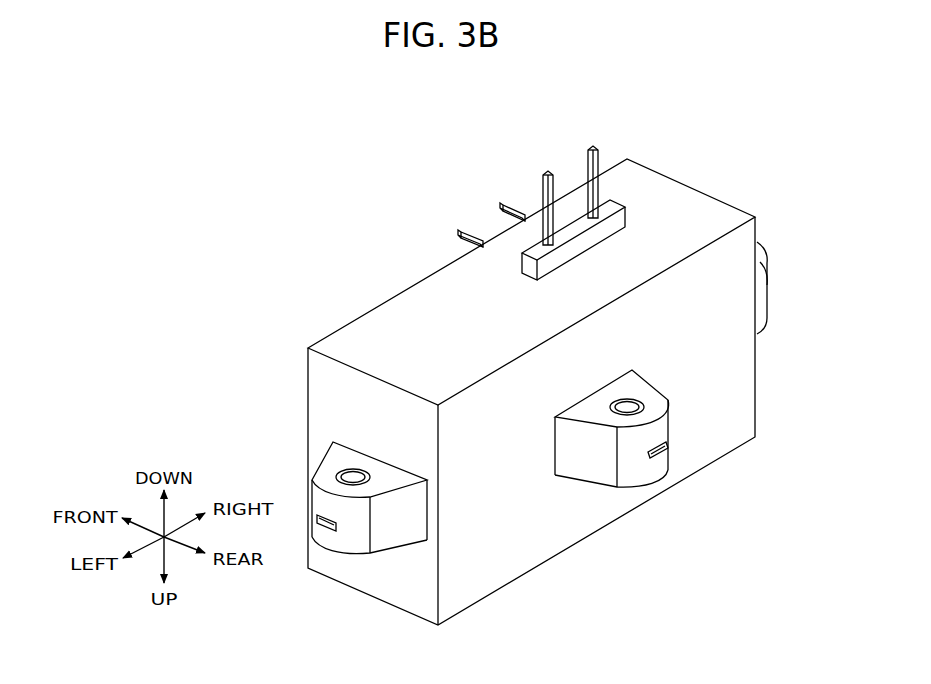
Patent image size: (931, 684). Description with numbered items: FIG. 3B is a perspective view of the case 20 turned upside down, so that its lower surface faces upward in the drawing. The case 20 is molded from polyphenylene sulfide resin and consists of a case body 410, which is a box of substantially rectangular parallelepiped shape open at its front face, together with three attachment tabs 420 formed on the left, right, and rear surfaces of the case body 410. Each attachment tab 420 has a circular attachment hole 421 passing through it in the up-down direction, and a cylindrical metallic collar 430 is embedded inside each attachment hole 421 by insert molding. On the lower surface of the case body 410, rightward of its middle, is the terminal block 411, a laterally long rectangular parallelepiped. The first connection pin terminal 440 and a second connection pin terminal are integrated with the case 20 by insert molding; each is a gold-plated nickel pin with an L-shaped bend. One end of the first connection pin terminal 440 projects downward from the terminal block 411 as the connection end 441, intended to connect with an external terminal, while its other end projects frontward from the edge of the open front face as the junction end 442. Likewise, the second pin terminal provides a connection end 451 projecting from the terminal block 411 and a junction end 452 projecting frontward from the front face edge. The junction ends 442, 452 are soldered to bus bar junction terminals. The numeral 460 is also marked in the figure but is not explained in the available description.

The case 20 is at (329, 293).
The case body 410 is at (422, 300).
The terminal block 411 is at (627, 223).
The attachment tab 420 is at (767, 275).
The attachment hole 421 is at (350, 477).
The collar 430 is at (367, 457).
The first connection pin terminal 440 is at (600, 160).
The connection end 441 is at (588, 148).
The junction end 442 is at (503, 207).
The connection end 451 is at (543, 170).
The junction end 452 is at (462, 231).
The slot 460 is at (542, 208).